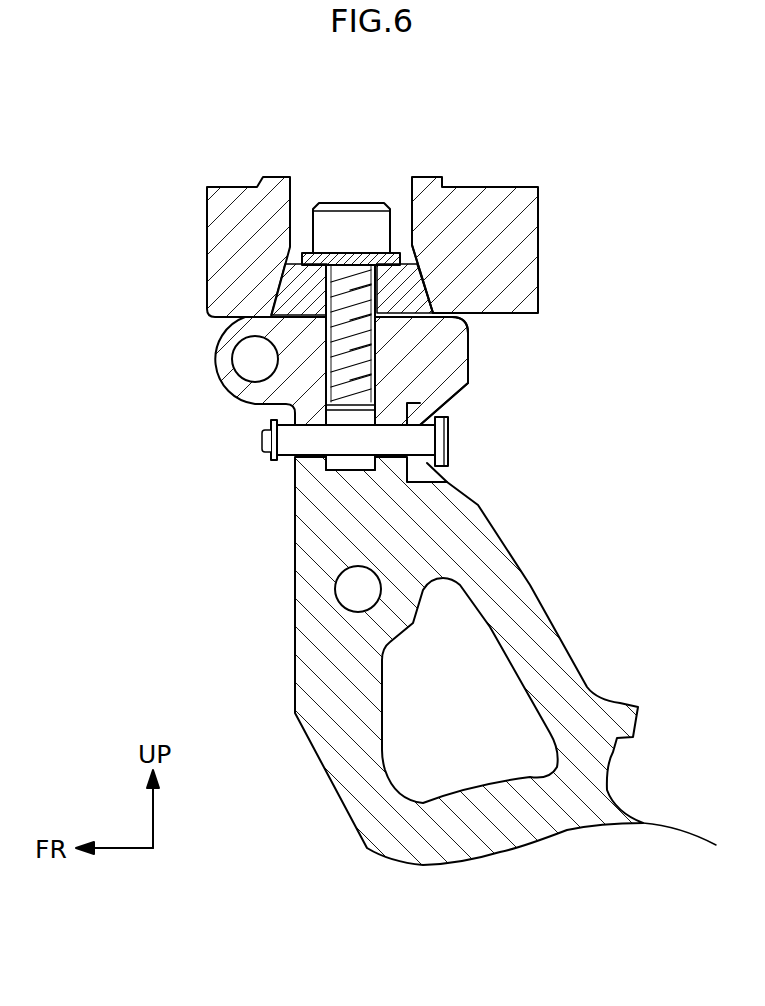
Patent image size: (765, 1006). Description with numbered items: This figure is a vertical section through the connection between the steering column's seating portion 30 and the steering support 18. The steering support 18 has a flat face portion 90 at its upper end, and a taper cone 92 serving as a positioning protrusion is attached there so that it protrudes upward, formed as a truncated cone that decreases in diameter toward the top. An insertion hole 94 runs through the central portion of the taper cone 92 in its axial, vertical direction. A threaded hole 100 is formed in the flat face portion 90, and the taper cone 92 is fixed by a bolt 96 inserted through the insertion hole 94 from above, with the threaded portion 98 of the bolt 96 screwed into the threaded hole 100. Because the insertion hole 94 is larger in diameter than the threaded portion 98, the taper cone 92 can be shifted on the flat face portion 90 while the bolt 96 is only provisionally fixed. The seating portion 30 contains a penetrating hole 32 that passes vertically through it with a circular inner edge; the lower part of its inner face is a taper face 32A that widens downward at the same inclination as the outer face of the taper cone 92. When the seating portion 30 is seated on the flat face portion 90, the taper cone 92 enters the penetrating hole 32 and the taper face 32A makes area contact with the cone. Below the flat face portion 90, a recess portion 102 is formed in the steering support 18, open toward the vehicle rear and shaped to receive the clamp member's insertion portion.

The steering support 18 is at (600, 640).
The seating portion 30 is at (203, 221).
The penetrating hole 32 is at (293, 190).
The taper face 32A is at (418, 256).
The flat face portion 90 is at (339, 367).
The taper cone 92 is at (428, 300).
The insertion hole 94 is at (371, 296).
The bolt 96 is at (352, 199).
The threaded portion 98 is at (462, 347).
The threaded hole 100 is at (462, 387).
The recess portion 102 is at (450, 442).